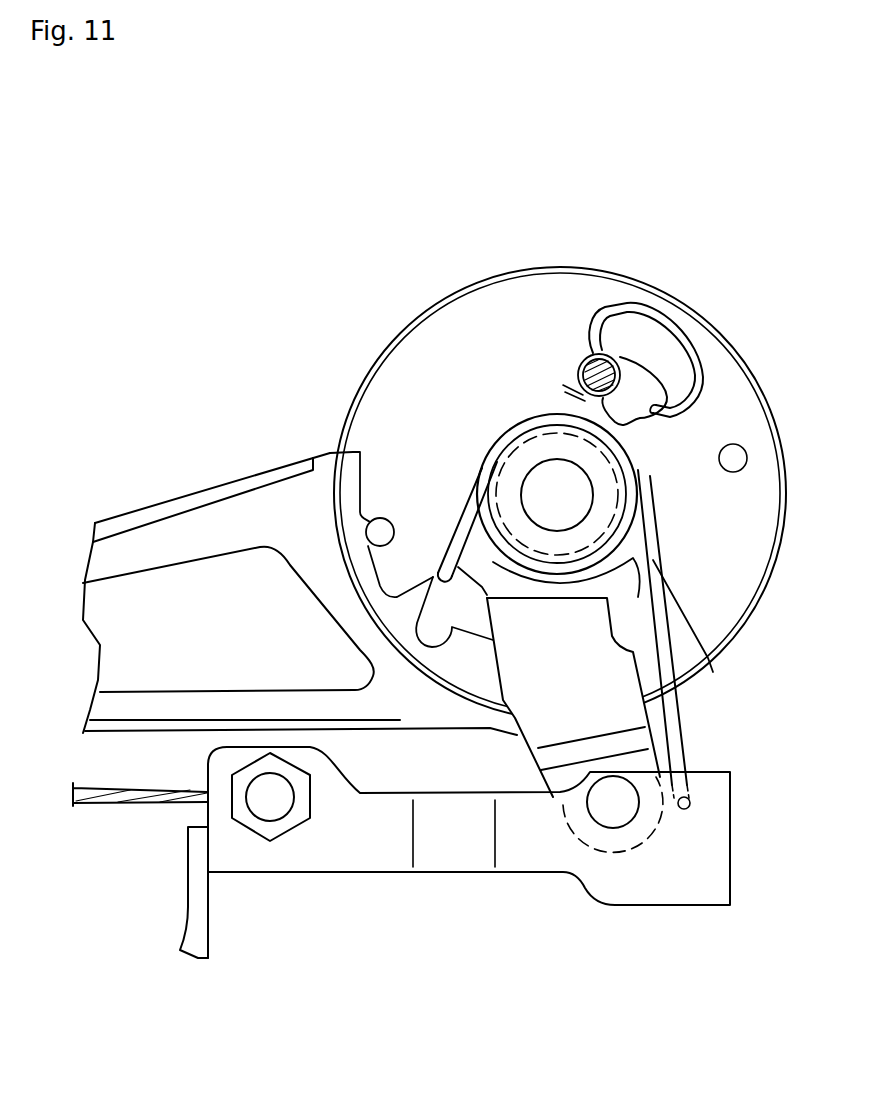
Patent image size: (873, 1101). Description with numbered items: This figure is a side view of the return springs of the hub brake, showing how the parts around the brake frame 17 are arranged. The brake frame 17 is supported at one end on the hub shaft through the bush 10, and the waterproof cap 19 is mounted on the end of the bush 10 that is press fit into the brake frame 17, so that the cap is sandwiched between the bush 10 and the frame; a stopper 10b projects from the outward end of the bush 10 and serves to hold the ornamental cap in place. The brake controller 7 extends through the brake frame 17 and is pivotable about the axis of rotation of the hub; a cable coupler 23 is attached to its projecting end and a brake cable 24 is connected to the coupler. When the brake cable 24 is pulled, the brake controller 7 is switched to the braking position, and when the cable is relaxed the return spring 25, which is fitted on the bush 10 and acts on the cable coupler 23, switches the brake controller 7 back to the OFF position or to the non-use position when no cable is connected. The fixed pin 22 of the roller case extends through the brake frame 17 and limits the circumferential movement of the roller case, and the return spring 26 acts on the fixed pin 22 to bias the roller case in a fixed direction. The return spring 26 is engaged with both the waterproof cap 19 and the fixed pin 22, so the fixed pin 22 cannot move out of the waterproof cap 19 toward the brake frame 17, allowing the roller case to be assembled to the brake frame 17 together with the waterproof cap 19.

The brake controller 7 is at (537, 700).
The bush 10 is at (520, 462).
The stopper 10b is at (536, 432).
The brake frame 17 is at (225, 490).
The waterproof cap 19 is at (422, 344).
The fixed pin 22 is at (578, 360).
The cable coupler 23 is at (345, 865).
The brake cable 24 is at (138, 806).
The return spring 25 is at (470, 490).
The return spring 26 is at (688, 347).